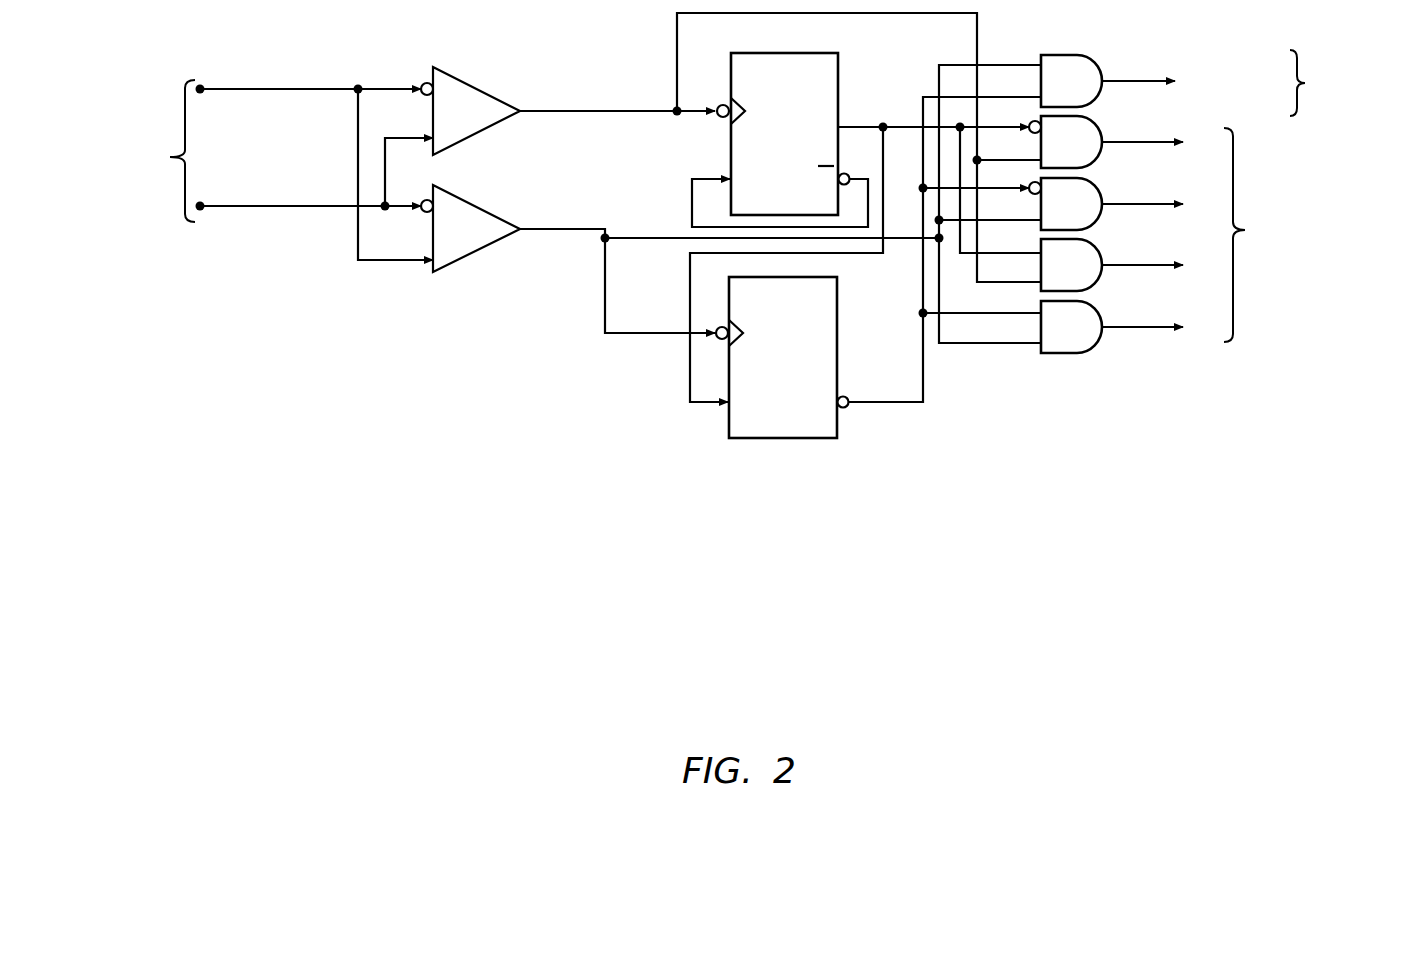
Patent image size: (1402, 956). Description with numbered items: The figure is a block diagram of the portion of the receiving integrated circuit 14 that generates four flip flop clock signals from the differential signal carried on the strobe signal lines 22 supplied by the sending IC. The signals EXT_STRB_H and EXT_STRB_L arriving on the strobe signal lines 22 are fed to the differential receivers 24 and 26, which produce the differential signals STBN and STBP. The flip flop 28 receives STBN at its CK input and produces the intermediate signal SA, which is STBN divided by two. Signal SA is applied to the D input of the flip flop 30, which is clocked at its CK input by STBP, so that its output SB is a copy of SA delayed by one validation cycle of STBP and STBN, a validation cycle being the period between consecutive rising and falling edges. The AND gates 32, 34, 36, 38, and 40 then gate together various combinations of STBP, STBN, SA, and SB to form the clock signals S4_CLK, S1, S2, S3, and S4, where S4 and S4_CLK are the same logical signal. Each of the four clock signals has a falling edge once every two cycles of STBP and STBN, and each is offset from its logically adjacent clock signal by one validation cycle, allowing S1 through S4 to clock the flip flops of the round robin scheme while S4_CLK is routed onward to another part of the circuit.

The receiving integrated circuit 14 is at (468, 440).
The strobe signal lines 22 is at (249, 159).
The differential receiver 24 is at (474, 84).
The differential receiver 26 is at (475, 253).
The flip flop 28 is at (838, 80).
The flip flop 30 is at (838, 427).
The AND gate 32 is at (1090, 55).
The AND gate 34 is at (1100, 130).
The AND gate 36 is at (1100, 193).
The AND gate 38 is at (1100, 255).
The AND gate 40 is at (1100, 317).